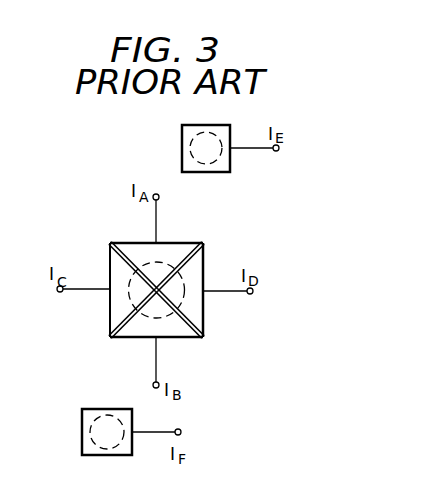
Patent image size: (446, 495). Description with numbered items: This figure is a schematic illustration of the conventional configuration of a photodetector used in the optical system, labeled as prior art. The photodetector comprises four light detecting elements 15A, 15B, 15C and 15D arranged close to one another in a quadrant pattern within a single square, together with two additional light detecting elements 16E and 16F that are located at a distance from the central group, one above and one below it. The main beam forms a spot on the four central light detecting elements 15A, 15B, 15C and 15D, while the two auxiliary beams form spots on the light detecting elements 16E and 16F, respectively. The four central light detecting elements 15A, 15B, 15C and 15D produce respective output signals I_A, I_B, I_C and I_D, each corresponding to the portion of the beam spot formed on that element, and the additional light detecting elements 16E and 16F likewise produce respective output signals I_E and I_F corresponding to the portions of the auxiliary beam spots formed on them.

The light detecting element 15A is at (132, 250).
The light detecting element 15B is at (179, 332).
The light detecting element 15C is at (110, 318).
The light detecting element 15D is at (205, 263).
The additional light detecting element 16E is at (182, 146).
The additional light detecting element 16F is at (82, 432).